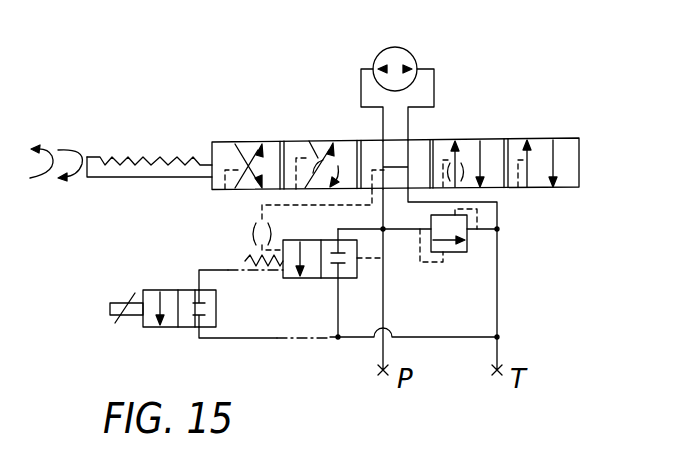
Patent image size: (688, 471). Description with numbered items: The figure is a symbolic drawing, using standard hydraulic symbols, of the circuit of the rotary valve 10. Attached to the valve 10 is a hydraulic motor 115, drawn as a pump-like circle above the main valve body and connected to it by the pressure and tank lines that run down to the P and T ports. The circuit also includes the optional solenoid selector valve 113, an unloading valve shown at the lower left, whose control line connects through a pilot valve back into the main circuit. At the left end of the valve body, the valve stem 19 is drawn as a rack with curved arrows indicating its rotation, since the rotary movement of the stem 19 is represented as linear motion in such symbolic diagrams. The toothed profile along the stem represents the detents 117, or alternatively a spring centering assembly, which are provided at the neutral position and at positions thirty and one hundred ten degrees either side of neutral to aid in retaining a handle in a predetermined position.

The rotary valve 10 is at (610, 261).
The valve stem 19 is at (143, 178).
The solenoid selector valve 113 is at (177, 290).
The hydraulic motor 115 is at (377, 51).
The detents 117 is at (178, 158).